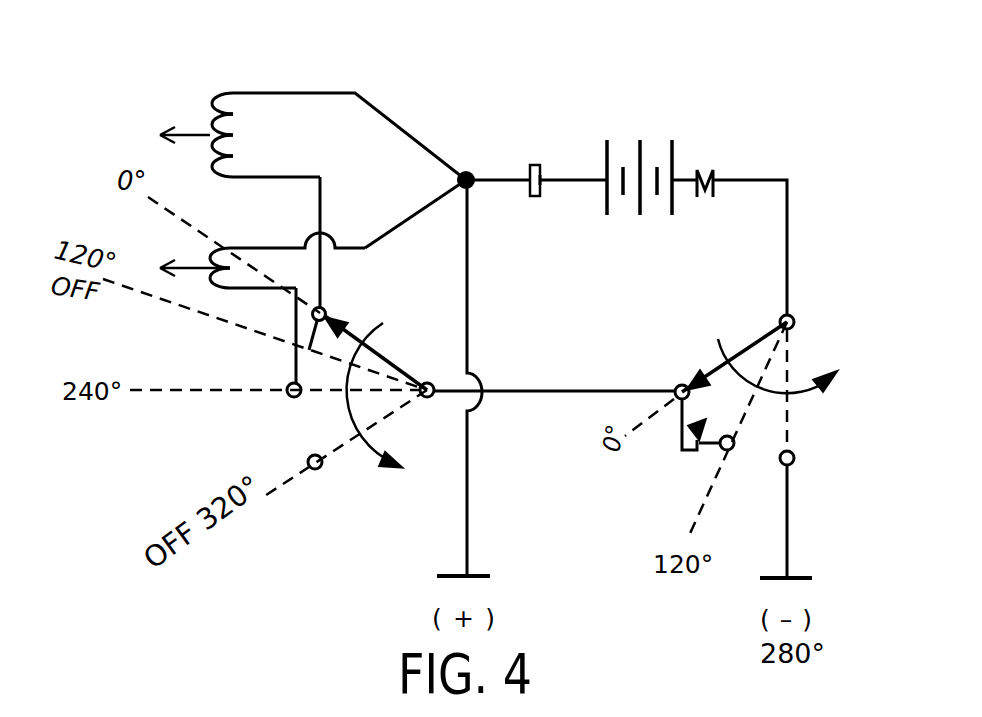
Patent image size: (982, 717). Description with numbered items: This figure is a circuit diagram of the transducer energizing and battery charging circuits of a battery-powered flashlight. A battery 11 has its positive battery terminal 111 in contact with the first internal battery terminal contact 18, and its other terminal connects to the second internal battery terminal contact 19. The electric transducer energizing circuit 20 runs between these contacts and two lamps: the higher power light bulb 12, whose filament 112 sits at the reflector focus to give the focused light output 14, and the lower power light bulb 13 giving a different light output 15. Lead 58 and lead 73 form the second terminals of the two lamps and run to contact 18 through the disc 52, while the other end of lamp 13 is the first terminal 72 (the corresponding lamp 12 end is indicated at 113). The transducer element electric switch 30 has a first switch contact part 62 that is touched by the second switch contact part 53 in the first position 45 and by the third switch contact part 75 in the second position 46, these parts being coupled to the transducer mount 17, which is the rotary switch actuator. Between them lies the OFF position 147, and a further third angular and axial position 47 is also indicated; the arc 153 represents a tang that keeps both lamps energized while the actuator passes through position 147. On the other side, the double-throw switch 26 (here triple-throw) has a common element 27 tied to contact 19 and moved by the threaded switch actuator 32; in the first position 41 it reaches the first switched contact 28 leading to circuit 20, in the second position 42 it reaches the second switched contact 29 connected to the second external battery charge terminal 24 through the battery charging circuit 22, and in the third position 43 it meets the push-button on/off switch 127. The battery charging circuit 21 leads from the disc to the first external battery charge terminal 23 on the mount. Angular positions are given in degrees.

The battery 11 is at (650, 121).
The light bulb 12 is at (225, 84).
The light bulb 13 is at (232, 236).
The light output 14 is at (168, 136).
The light output 15 is at (176, 271).
The transducer mount 17 is at (350, 412).
The first internal battery terminal contact 18 is at (542, 164).
The second internal battery terminal contact 19 is at (713, 172).
The electric transducer energizing circuit 20 is at (543, 386).
The battery charging circuit 21 is at (469, 487).
The battery charging circuit 22 is at (790, 508).
The first external battery charge terminal 23 is at (452, 577).
The second external battery charge terminal 24 is at (815, 580).
The double-throw switch 26 is at (786, 352).
The common element 27 is at (748, 348).
The first switched contact 28 is at (683, 384).
The second switched contact 29 is at (793, 462).
The transducer element electric switch 30 is at (400, 320).
The threaded switch actuator 32 is at (792, 393).
The first position 41 is at (698, 378).
The second position 42 is at (790, 430).
The third position 43 is at (744, 425).
The first position 45 is at (352, 330).
The second position 46 is at (328, 400).
The third angular and axial position 47 is at (343, 460).
The disc 52 is at (470, 174).
The second switch contact part 53 is at (314, 306).
The lead 58 is at (405, 130).
The first switch contact part 62 is at (428, 382).
The first terminal 72 is at (290, 310).
The lead 73 is at (425, 206).
The third switch contact part 75 is at (288, 385).
The positive battery terminal 111 is at (549, 179).
The filament 112 is at (250, 94).
The coil end lead 113 is at (220, 288).
The push-button on/off switch 127 is at (693, 458).
The position 147 is at (180, 313).
The arc 153 is at (348, 292).